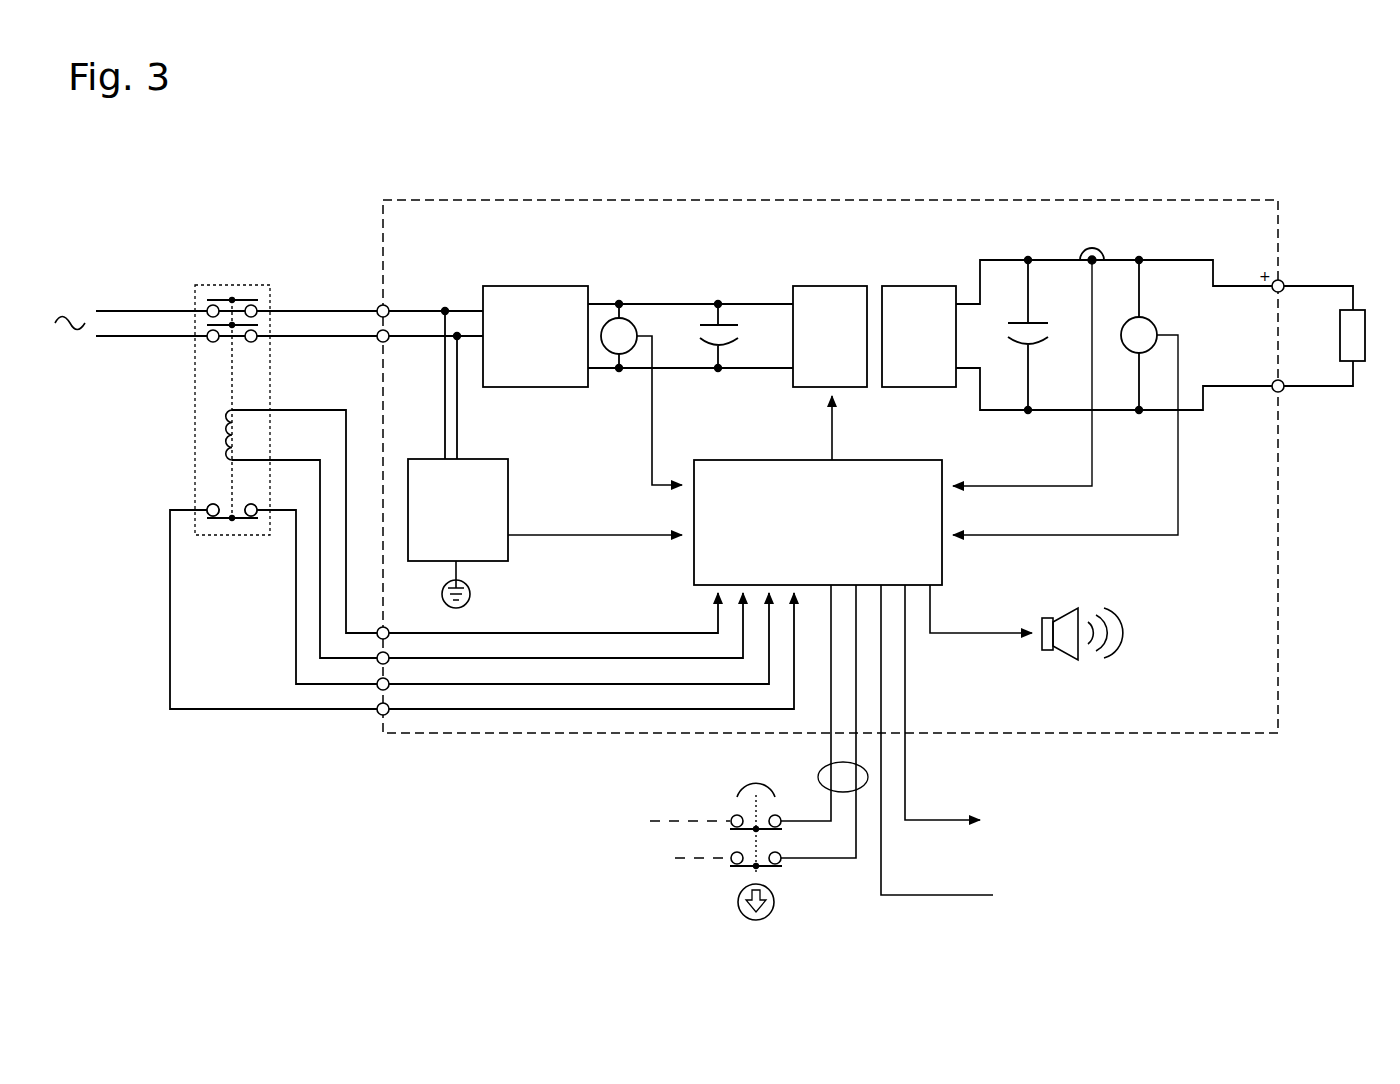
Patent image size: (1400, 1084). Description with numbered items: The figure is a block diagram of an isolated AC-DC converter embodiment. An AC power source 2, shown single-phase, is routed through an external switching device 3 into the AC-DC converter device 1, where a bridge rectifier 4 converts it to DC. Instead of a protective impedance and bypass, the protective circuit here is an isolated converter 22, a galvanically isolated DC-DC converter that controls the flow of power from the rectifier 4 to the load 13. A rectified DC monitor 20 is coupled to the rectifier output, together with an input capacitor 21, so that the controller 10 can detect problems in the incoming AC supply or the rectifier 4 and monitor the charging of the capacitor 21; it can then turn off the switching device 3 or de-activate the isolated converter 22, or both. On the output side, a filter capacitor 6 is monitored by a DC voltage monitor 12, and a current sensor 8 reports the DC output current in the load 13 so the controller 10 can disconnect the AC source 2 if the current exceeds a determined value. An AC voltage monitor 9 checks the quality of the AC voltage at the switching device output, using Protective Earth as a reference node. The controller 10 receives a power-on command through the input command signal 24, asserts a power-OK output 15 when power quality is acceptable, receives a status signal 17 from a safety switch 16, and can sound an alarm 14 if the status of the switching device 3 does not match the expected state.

The AC-DC converter device 1 is at (1138, 200).
The AC power source 2 is at (269, 307).
The external switching device 3 is at (482, 484).
The bridge rectifier 4 is at (535, 324).
The filter capacitor 6 is at (1031, 335).
The current sensor 8 is at (1029, 355).
The AC voltage monitor 9 is at (545, 498).
The controller 10 is at (818, 490).
The DC voltage monitor 12 is at (1072, 396).
The load 13 is at (1342, 335).
The alarm 14 is at (1026, 621).
The power-OK output 15 is at (997, 708).
The safety switch 16 is at (777, 902).
The status signal 17 is at (818, 778).
The rectified DC monitor 20 is at (640, 331).
The input capacitor 21 is at (740, 338).
The isolated converter 22 is at (874, 325).
The input command signal 24 is at (998, 745).